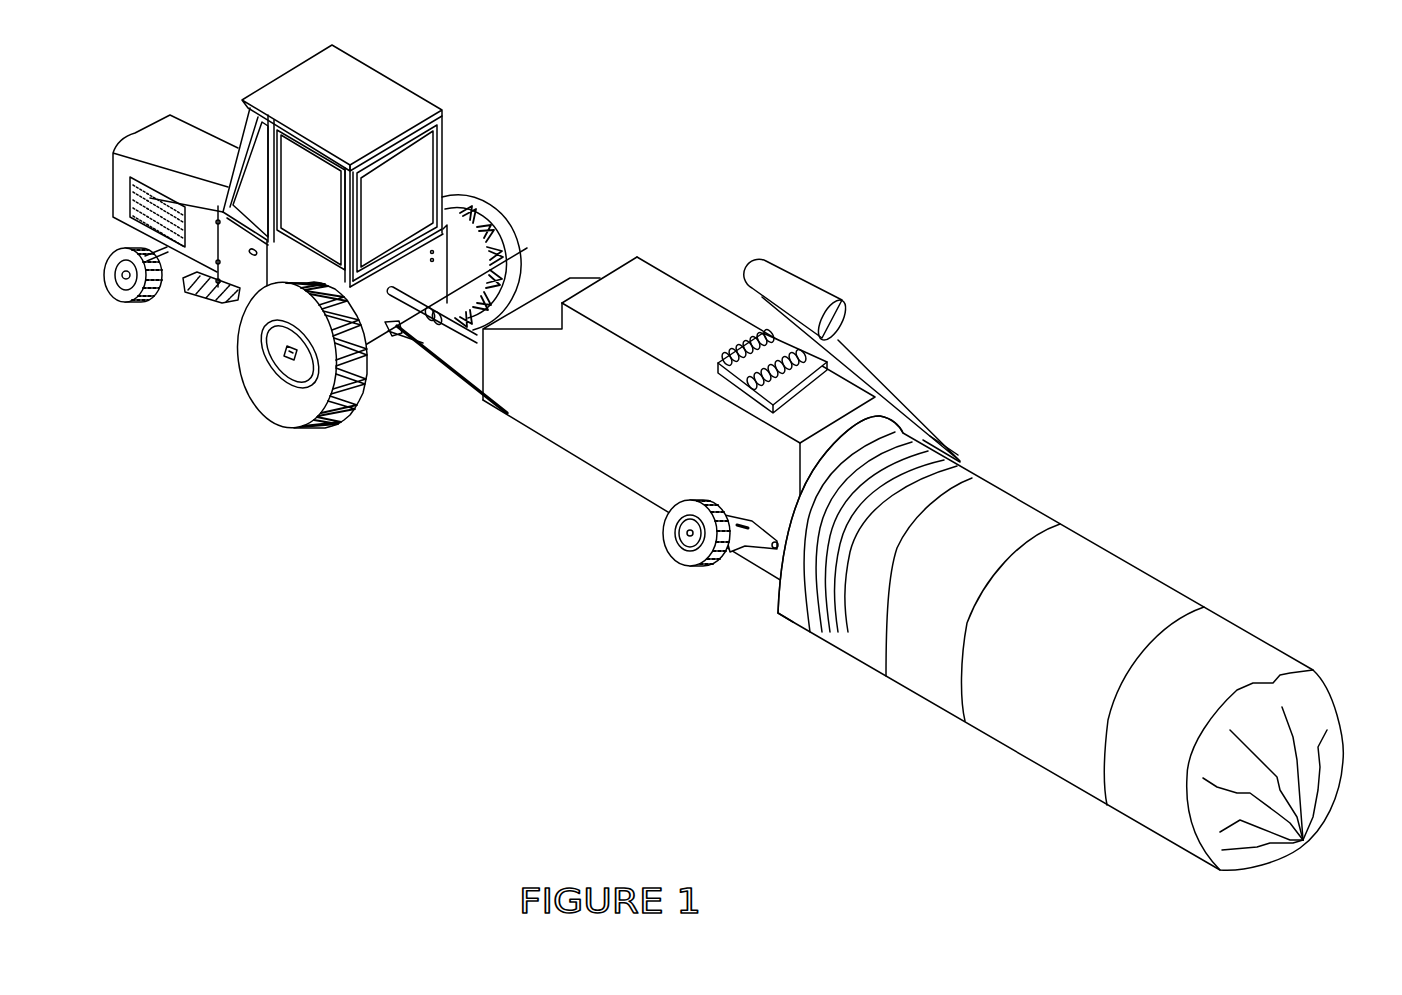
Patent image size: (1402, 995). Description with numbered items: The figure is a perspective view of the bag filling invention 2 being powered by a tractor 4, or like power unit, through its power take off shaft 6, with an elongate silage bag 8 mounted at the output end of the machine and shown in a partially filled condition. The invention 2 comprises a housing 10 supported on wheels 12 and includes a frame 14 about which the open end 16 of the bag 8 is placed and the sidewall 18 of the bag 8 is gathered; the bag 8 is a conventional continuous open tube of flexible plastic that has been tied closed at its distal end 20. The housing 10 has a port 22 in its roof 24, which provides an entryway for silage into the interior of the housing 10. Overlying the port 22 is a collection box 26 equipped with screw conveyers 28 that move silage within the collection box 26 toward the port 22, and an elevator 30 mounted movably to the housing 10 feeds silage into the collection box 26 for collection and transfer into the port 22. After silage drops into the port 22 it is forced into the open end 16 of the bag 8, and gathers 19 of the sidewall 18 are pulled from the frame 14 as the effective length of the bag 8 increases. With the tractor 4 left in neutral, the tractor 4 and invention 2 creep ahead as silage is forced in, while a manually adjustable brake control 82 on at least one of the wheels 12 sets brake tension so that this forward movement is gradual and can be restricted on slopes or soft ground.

The bag filling invention 2 is at (535, 447).
The tractor 4 is at (212, 315).
The power take off shaft 6 is at (527, 248).
The silage bag 8 is at (1123, 578).
The housing 10 is at (527, 397).
The wheels 12 is at (680, 550).
The frame 14 is at (790, 582).
The open end 16 is at (793, 617).
The sidewall 18 is at (998, 518).
The gathers 19 is at (933, 440).
The distal end 20 is at (1308, 850).
The port 22 is at (822, 349).
The roof 24 is at (657, 283).
The collection box 26 is at (738, 386).
The screw conveyers 28 is at (762, 333).
The elevator 30 is at (893, 388).
The brake control 82 is at (753, 533).